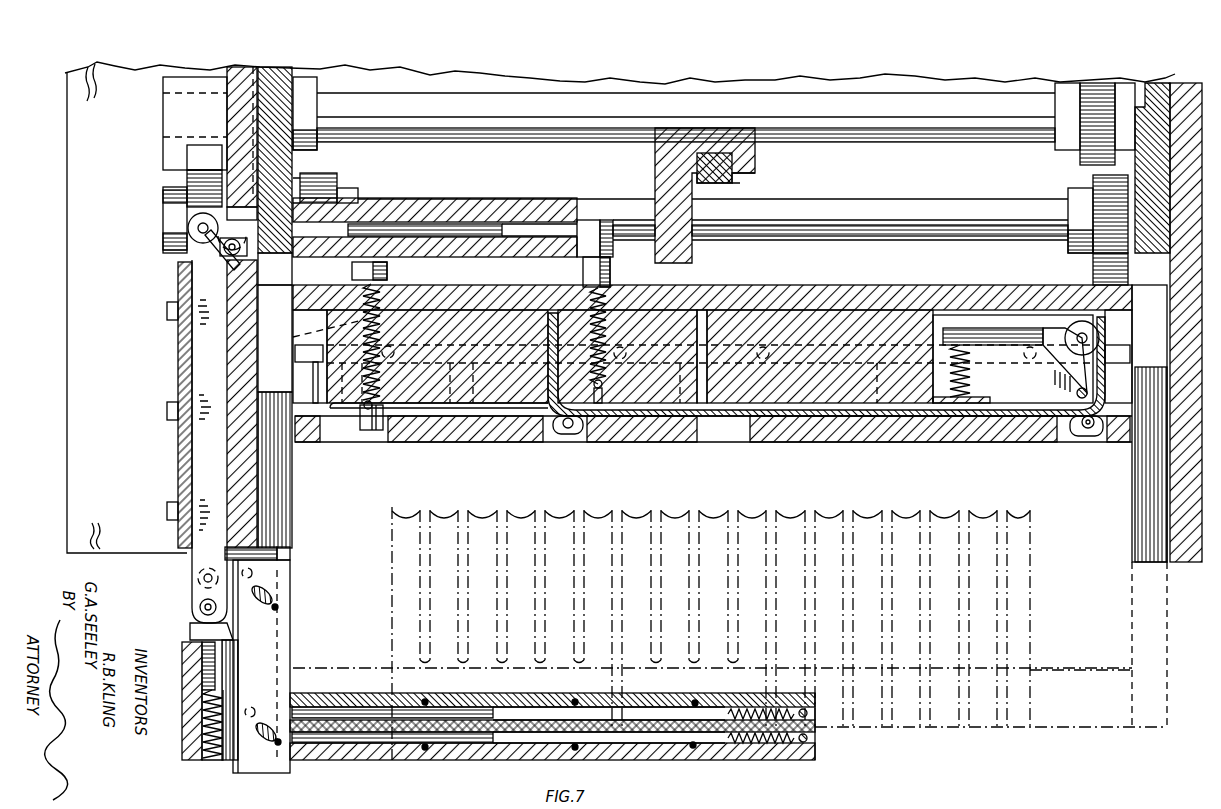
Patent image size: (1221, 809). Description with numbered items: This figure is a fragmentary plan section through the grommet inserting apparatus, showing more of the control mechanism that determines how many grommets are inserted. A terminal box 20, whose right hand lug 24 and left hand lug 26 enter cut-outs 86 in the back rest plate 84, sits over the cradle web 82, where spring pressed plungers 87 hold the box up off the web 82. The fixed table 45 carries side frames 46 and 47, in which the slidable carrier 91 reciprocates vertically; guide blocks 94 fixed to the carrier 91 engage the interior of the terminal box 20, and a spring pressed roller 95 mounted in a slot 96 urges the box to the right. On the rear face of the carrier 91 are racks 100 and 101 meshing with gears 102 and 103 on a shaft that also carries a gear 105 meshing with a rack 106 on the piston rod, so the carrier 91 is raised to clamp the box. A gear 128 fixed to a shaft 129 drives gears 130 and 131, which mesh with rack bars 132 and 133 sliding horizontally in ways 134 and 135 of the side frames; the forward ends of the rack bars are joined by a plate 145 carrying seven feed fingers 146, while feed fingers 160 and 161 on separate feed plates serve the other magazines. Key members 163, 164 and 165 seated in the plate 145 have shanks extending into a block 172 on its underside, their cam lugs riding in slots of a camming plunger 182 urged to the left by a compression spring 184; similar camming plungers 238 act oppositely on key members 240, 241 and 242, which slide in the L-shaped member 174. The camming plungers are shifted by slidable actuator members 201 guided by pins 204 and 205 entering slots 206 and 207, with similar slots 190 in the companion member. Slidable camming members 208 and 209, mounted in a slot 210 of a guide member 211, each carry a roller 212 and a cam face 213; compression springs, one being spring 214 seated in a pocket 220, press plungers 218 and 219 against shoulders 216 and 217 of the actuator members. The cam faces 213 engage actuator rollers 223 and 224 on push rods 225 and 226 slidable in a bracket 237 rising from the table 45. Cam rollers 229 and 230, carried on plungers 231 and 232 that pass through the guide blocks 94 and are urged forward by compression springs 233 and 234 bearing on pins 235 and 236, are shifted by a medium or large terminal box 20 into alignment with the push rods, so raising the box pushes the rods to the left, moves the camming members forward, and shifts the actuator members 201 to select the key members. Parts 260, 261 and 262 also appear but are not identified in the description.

The terminal box 20 is at (738, 420).
The right hand lug 24 is at (1085, 432).
The left hand lug 26 is at (567, 432).
The table 45 is at (77, 529).
The side frame 46 is at (247, 108).
The side frame 47 is at (1180, 565).
The web 82 is at (313, 375).
The plate 84 is at (842, 440).
The cut-out 86 is at (388, 440).
The spring pressed plunger 87 is at (392, 358).
The slidable carrier 91 is at (793, 295).
The guide block 94 is at (470, 320).
The spring pressed roller 95 is at (1100, 338).
The slot 96 is at (1003, 397).
The rack 100 is at (293, 272).
The rack 101 is at (1100, 268).
The gear 102 is at (322, 180).
The gear 103 is at (1100, 190).
The gear 105 is at (187, 185).
The rack 106 is at (187, 157).
The gear 128 is at (1082, 120).
The shaft 129 is at (898, 140).
The gear 130 is at (320, 92).
The gear 131 is at (1150, 90).
The rack bar 132 is at (298, 178).
The rack bar 133 is at (1095, 210).
The way 134 is at (275, 500).
The way 135 is at (1140, 545).
The plate 145 is at (1105, 678).
The feed finger 146 is at (1007, 553).
The feed finger 160 is at (753, 517).
The feed finger 161 is at (562, 520).
The key member 163 is at (697, 702).
The key member 164 is at (575, 702).
The key member 165 is at (428, 702).
The block 172 is at (350, 696).
The L-shaped member 174 is at (352, 760).
The camming plunger 182 is at (648, 718).
The compression spring 184 is at (817, 688).
The slots 190 is at (252, 573).
The actuator member 201 is at (290, 637).
The pin 204 is at (275, 595).
The pin 205 is at (257, 735).
The slot 206 is at (277, 607).
The slot 207 is at (270, 747).
The camming member 208 is at (197, 535).
The camming member 209 is at (198, 577).
The slot 210 is at (193, 393).
The guide member 211 is at (180, 370).
The roller 212 is at (200, 605).
The cam face 213 is at (220, 250).
The compression spring 214 is at (192, 740).
The shoulder 216 is at (236, 645).
The shoulder 217 is at (195, 620).
The plunger 218 is at (198, 655).
The plunger 219 is at (195, 635).
The pocket 220 is at (212, 760).
The actuator roller 223 is at (190, 222).
The actuator roller 224 is at (212, 262).
The push rod 225 is at (455, 224).
The push rod 226 is at (390, 224).
The cam roller 229 is at (592, 228).
The cam roller 230 is at (388, 272).
The plunger 231 is at (610, 272).
The plunger 232 is at (373, 432).
The compression spring 233 is at (553, 312).
The compression spring 234 is at (296, 352).
The pin 235 is at (598, 400).
The pin 236 is at (367, 410).
The bracket 237 is at (530, 205).
The camming plunger 238 is at (470, 732).
The key member 240 is at (693, 750).
The key member 241 is at (575, 750).
The key member 242 is at (425, 750).
The ledge 260 is at (740, 180).
The block 261 is at (733, 165).
The block 262 is at (655, 155).